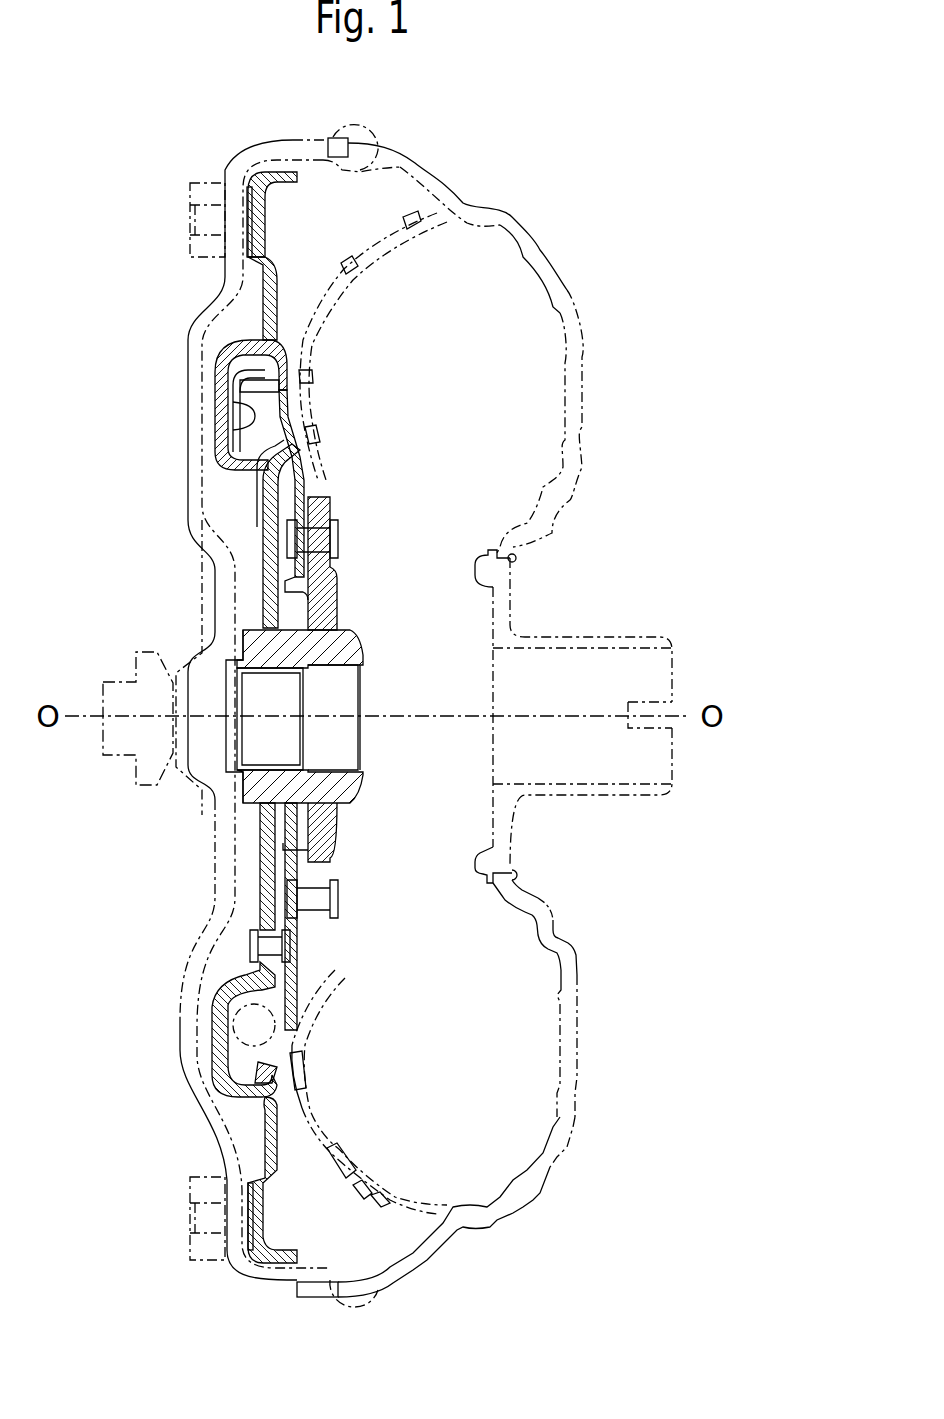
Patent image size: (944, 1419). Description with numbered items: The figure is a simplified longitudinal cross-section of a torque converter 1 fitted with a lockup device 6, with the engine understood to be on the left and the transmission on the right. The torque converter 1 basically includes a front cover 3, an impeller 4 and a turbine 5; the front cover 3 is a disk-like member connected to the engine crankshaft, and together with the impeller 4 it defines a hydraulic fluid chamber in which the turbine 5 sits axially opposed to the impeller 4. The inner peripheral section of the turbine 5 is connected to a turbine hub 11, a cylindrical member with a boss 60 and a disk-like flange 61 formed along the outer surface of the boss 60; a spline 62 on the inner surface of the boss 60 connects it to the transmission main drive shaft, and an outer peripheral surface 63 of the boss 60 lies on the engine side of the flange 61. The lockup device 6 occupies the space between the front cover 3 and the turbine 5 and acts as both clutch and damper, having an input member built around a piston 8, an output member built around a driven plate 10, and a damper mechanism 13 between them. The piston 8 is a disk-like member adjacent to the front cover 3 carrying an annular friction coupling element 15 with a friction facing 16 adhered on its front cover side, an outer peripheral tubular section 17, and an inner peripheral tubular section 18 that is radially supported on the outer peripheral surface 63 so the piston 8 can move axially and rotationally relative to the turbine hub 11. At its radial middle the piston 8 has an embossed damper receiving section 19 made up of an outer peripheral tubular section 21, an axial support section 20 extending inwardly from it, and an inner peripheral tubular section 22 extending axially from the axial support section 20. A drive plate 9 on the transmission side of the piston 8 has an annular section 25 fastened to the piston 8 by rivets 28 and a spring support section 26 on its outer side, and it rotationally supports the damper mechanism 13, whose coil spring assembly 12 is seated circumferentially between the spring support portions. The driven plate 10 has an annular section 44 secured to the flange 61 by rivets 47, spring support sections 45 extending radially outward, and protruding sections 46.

The torque converter 1 is at (522, 187).
The front cover 3 is at (185, 453).
The impeller 4 is at (560, 288).
The turbine 5 is at (380, 235).
The lockup device 6 is at (312, 247).
The piston 8 is at (232, 332).
The drive plate 9 is at (253, 457).
The driven plate 10 is at (302, 438).
The turbine hub 11 is at (350, 604).
The coil spring assembly 12 is at (284, 366).
The damper mechanism 13 is at (290, 345).
The friction coupling element 15 is at (262, 213).
The friction facing 16 is at (247, 218).
The outer peripheral tubular section 17 is at (297, 172).
The inner peripheral tubular section 18 is at (300, 598).
The damper receiving section 19 is at (213, 407).
The axial support section 20 is at (220, 373).
The outer peripheral tubular section 21 is at (270, 320).
The inner peripheral tubular section 22 is at (247, 456).
The annular section 25 is at (282, 972).
The spring support section 26 is at (272, 1054).
The rivets 28 is at (256, 945).
The annular section 44 is at (305, 488).
The spring support sections 45 is at (283, 385).
The protruding sections 46 is at (297, 1000).
The rivets 47 is at (313, 540).
The boss 60 is at (323, 660).
The flange 61 is at (318, 584).
The spline 62 is at (277, 673).
The outer peripheral surface 63 is at (272, 623).